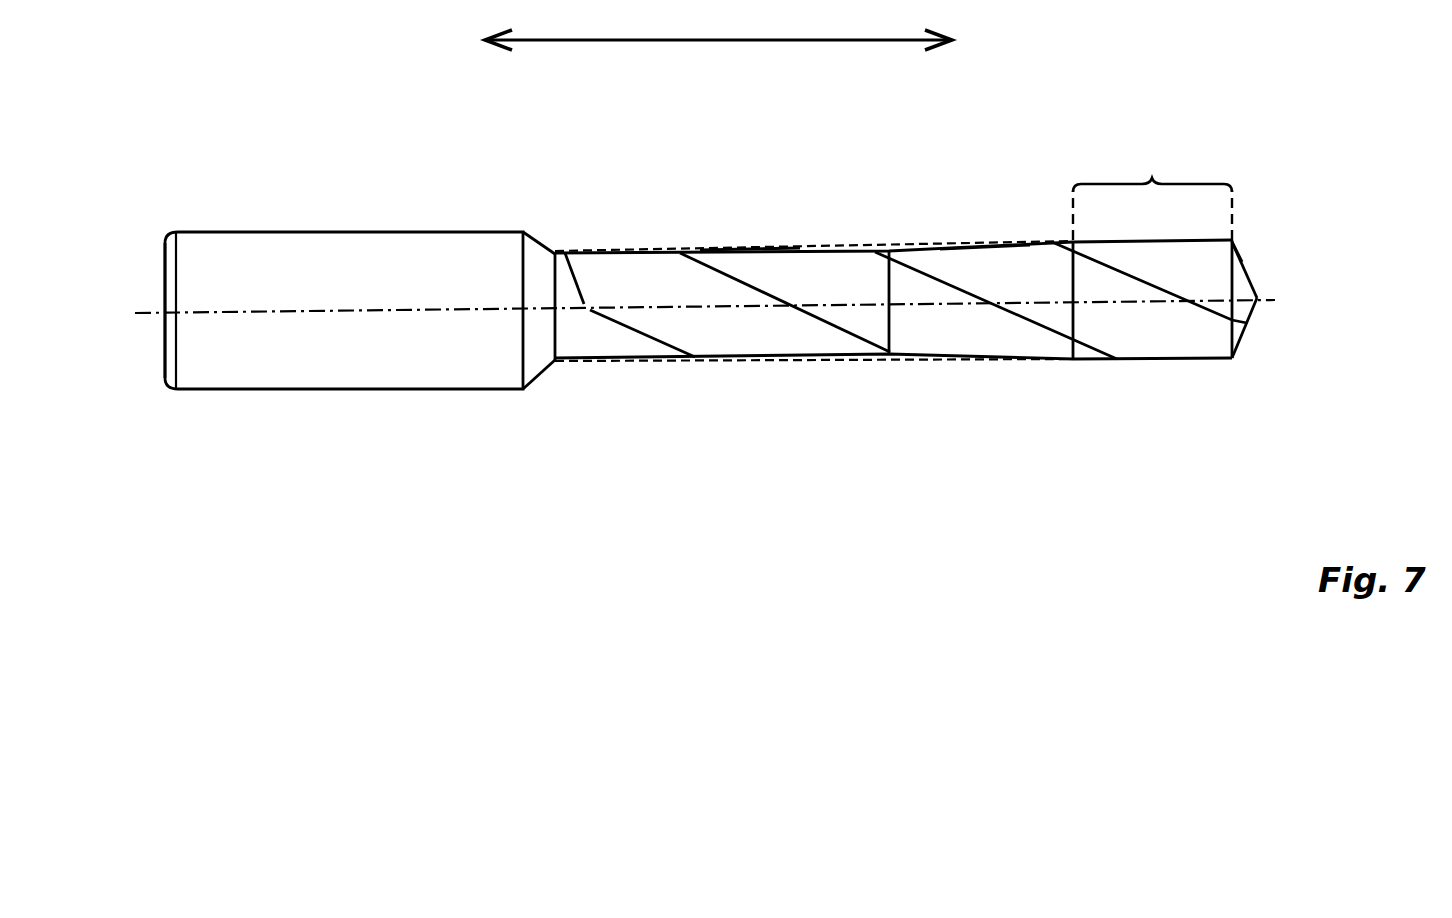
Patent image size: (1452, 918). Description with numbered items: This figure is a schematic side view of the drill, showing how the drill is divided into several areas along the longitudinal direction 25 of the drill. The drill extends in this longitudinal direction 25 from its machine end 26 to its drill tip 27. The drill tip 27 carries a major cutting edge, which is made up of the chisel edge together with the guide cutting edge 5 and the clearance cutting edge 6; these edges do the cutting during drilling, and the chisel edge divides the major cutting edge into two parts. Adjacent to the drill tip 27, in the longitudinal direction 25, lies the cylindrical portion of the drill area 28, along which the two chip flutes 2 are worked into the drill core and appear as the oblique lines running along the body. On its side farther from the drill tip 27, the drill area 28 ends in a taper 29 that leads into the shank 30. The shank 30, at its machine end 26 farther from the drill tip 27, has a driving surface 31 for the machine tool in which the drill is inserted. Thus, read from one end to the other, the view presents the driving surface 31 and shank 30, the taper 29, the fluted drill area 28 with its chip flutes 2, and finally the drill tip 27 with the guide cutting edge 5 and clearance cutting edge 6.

The chip flute 2 is at (770, 338).
The guide edge 5 is at (1247, 270).
The clearance cutting edge 6 is at (1243, 333).
The longitudinal direction 25 is at (715, 42).
The machine end 26 is at (165, 355).
The drill tip 27 is at (1240, 257).
The drill area 28 is at (1152, 185).
The taper 29 is at (982, 243).
The shank 30 is at (747, 250).
The driving surface 31 is at (372, 288).